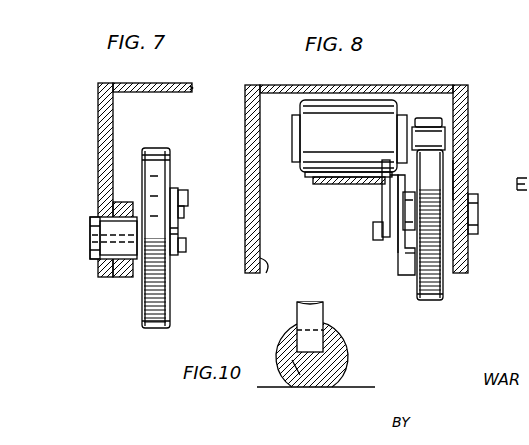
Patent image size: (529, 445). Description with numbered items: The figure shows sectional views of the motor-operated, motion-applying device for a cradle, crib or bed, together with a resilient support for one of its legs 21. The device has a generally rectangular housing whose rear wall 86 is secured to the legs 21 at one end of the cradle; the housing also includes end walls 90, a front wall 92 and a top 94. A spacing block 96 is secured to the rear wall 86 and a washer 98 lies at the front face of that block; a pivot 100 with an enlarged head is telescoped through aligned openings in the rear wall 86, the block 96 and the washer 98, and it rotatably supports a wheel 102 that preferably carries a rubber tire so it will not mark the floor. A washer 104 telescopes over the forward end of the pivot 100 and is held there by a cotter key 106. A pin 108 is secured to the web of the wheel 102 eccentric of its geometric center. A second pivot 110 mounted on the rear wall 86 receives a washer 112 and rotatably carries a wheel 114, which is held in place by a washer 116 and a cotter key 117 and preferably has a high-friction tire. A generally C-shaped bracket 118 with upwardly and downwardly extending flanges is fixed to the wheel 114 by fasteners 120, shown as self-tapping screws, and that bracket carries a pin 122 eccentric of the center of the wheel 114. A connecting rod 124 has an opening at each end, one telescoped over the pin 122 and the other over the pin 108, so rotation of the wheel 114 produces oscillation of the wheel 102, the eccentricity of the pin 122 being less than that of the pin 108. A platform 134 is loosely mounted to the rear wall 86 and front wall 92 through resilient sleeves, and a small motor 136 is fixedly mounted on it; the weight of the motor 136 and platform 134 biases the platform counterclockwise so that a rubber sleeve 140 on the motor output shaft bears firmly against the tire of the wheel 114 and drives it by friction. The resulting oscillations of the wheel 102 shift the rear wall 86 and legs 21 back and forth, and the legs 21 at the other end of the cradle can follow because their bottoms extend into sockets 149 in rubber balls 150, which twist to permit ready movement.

In FIG. 10, the legs 21 is at (303, 318).
In FIG. 7, the rear wall 86 is at (100, 142).
In FIG. 8, the rear wall 86 is at (468, 272).
In FIG. 7, the end walls 90 is at (92, 311).
In FIG. 8, the front wall 92 is at (266, 276).
In FIG. 7, the top 94 is at (191, 87).
In FIG. 8, the top 94 is at (449, 86).
In FIG. 7, the spacing block 96 is at (128, 201).
In FIG. 7, the washer 98 is at (93, 229).
In FIG. 7, the pivot 100 is at (93, 250).
In FIG. 7, the wheel 102 is at (145, 320).
In FIG. 7, the washer 104 is at (176, 255).
In FIG. 7, the cotter key 106 is at (187, 251).
In FIG. 7, the pin 108 is at (185, 192).
In FIG. 8, the second pivot 110 is at (473, 195).
In FIG. 8, the washer 112 is at (464, 160).
In FIG. 8, the wheel 114 is at (442, 300).
In FIG. 8, the washer 116 is at (410, 232).
In FIG. 8, the cotter key 117 is at (412, 198).
In FIG. 8, the bracket 118 is at (397, 256).
In FIG. 8, the fasteners 120 is at (410, 265).
In FIG. 8, the pin 122 is at (373, 232).
In FIG. 7, the connecting rod 124 is at (185, 213).
In FIG. 8, the connecting rod 124 is at (382, 200).
In FIG. 8, the platform 134 is at (313, 184).
In FIG. 8, the motor 136 is at (318, 110).
In FIG. 8, the sleeve 140 is at (443, 137).
In FIG. 10, the sockets 149 is at (347, 342).
In FIG. 10, the balls 150 is at (292, 382).